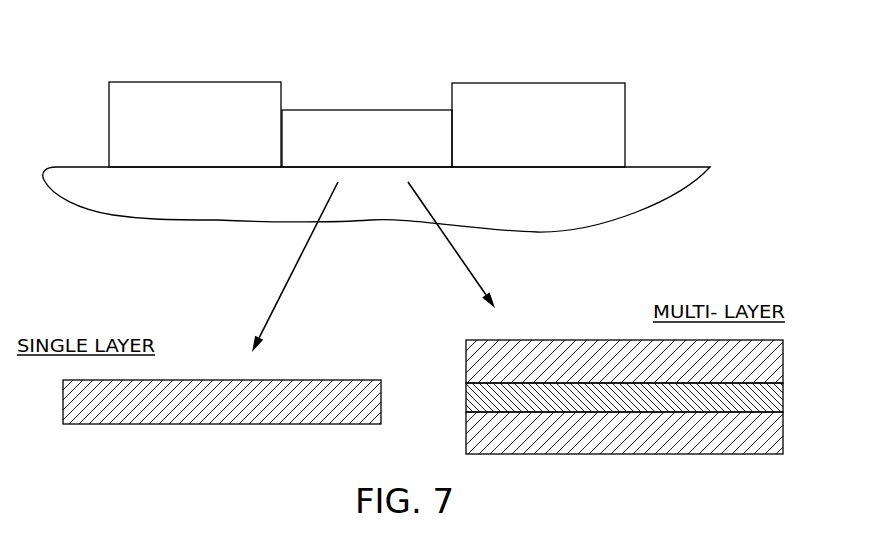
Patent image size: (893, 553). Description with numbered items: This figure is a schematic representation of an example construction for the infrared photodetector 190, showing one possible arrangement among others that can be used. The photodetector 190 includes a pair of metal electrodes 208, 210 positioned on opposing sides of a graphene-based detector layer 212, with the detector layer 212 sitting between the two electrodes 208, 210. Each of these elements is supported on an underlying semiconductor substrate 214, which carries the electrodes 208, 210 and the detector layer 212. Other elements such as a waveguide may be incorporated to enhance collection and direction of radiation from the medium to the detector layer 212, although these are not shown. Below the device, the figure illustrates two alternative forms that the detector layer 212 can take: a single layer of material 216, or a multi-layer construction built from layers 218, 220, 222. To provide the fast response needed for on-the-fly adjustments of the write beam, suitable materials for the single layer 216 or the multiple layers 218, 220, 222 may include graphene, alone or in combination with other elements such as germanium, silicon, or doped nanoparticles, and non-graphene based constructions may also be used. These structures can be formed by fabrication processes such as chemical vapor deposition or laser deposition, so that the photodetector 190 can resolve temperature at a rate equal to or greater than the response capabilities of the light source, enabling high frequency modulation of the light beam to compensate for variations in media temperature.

The photodetector 190 is at (125, 37).
The metal electrode 208 is at (193, 82).
The metal electrode 210 is at (538, 83).
The graphene-based detector layer 212 is at (367, 110).
The semiconductor substrate 214 is at (658, 167).
The single layer of material 216 is at (165, 424).
The layer of multi-layer construction 218 is at (552, 353).
The layer of multi-layer construction 220 is at (472, 397).
The layer of multi-layer construction 222 is at (543, 440).